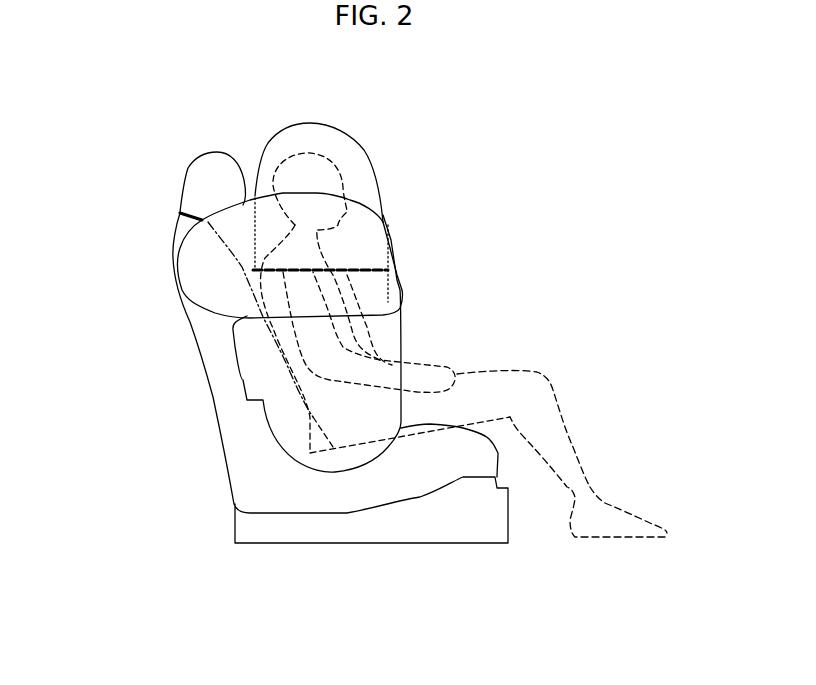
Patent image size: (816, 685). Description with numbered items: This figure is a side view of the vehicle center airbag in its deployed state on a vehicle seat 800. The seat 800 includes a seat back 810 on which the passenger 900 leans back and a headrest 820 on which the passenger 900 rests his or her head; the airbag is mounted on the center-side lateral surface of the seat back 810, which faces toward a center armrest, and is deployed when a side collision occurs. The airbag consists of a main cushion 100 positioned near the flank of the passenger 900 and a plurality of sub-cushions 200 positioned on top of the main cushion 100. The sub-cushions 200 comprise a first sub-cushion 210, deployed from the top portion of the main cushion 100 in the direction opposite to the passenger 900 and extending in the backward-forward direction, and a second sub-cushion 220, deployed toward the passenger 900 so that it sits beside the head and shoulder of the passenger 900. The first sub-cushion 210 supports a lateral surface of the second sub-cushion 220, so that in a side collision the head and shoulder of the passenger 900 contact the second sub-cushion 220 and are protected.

The main cushion 100 is at (383, 332).
The sub-cushions 200 is at (427, 353).
The first sub-cushion 210 is at (290, 255).
The second sub-cushion 220 is at (352, 160).
The vehicle seat 800 is at (197, 377).
The seat back 810 is at (243, 462).
The headrest 820 is at (215, 173).
The passenger 900 is at (540, 364).